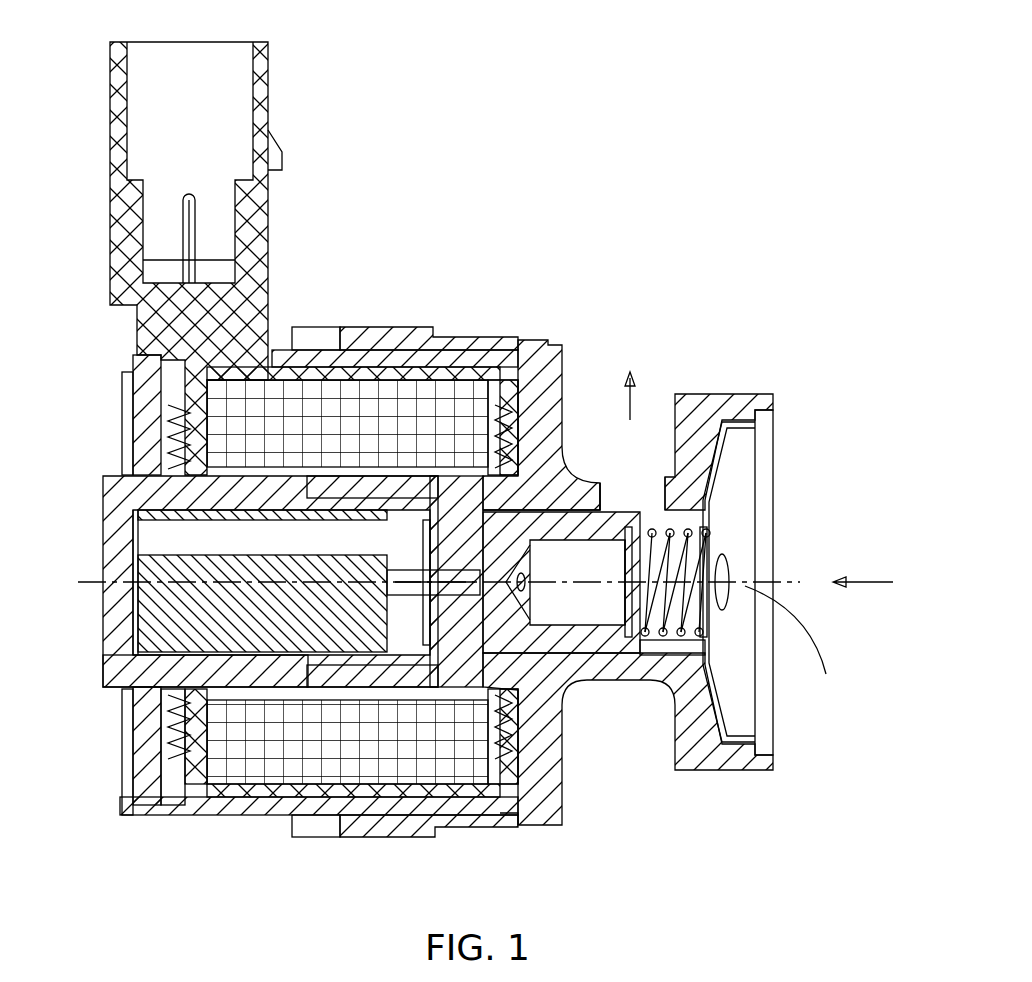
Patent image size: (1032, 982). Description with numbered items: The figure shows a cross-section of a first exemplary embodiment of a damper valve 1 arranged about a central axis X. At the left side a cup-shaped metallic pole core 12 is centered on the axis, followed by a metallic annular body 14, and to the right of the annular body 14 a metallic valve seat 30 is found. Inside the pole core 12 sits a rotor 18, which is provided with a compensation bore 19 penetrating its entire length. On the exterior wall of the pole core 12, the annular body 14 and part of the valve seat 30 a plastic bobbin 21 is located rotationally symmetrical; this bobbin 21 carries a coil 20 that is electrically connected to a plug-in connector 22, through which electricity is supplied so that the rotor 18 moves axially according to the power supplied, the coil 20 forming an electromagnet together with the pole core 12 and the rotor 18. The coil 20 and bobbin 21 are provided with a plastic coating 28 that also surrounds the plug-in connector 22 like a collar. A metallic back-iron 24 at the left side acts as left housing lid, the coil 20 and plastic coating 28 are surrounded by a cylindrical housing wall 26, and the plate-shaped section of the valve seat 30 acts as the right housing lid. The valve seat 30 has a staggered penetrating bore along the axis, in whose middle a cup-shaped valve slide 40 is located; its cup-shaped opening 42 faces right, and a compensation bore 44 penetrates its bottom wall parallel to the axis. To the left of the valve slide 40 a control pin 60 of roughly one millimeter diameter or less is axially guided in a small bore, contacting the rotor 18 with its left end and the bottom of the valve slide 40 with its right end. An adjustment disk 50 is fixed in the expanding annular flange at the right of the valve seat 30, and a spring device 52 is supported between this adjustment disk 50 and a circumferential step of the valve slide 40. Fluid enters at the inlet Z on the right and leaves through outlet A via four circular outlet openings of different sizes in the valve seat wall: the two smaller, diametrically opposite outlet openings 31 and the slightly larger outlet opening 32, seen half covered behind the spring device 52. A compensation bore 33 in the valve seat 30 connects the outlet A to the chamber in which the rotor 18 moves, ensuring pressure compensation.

The damper valve 1 is at (601, 102).
The pole core 12 is at (108, 620).
The annular body 14 is at (310, 668).
The rotor 18 is at (105, 688).
The compensation bore 19 is at (150, 533).
The coil 20 is at (305, 400).
The bobbin 21 is at (500, 385).
The plug-in connector 22 is at (195, 213).
The back-iron 24 is at (148, 800).
The cylindrical housing wall 26 is at (285, 816).
The plastic coating 28 is at (268, 212).
The valve seat 30 is at (556, 365).
The outlet opening 31 is at (655, 498).
The outlet opening 32 is at (655, 572).
The compensation bore 33 is at (546, 468).
The valve slide 40 is at (583, 640).
The cup-shaped opening 42 is at (565, 607).
The compensation bore 44 is at (550, 522).
The adjustment disk 50 is at (728, 441).
The spring device 52 is at (662, 640).
The control pin 60 is at (413, 590).